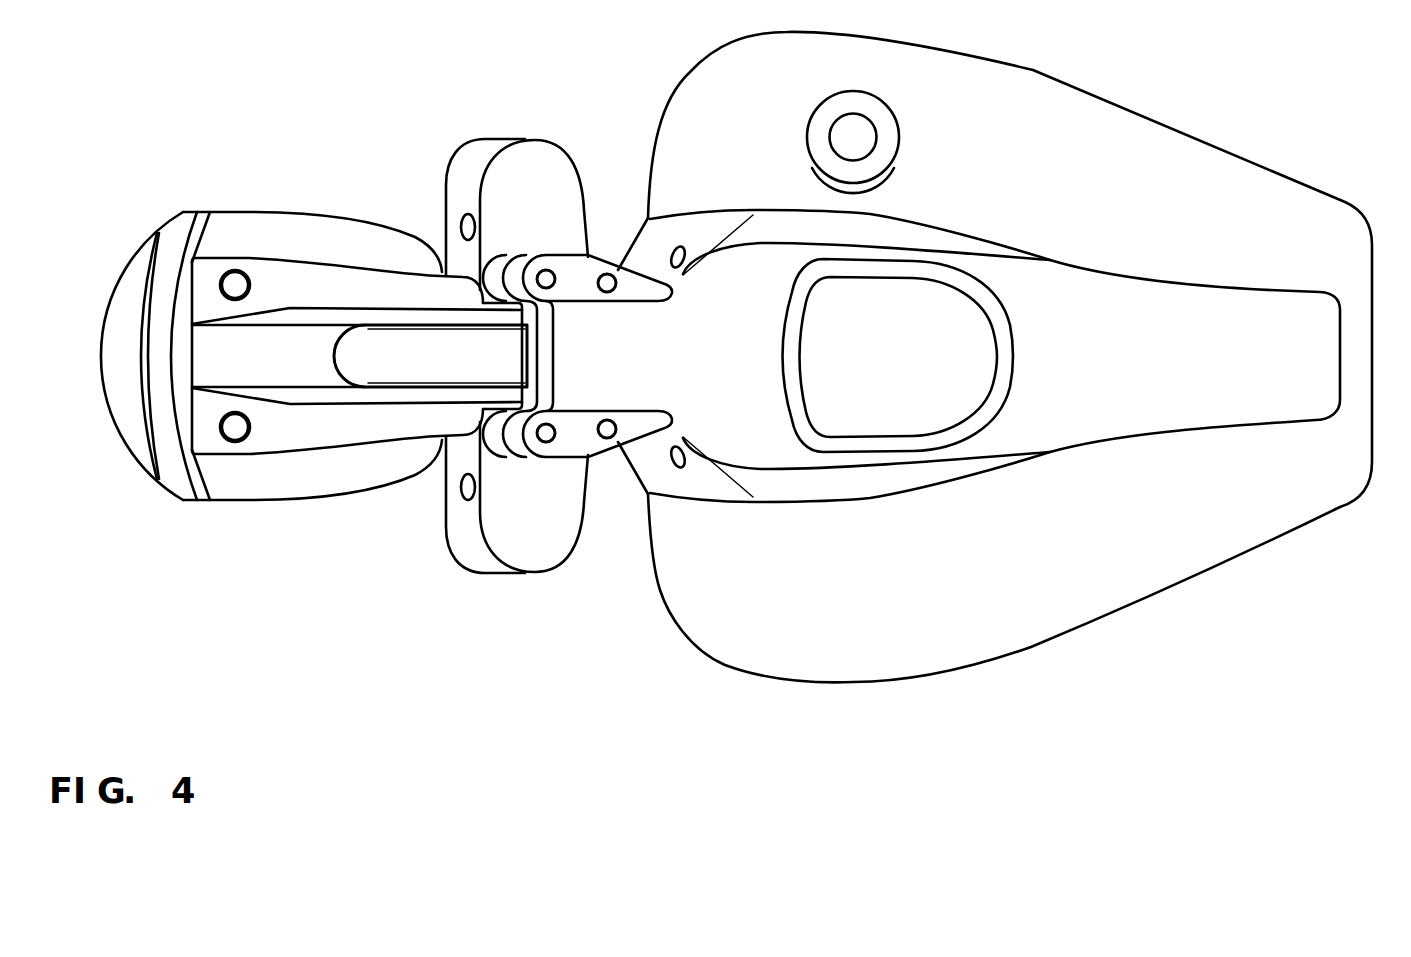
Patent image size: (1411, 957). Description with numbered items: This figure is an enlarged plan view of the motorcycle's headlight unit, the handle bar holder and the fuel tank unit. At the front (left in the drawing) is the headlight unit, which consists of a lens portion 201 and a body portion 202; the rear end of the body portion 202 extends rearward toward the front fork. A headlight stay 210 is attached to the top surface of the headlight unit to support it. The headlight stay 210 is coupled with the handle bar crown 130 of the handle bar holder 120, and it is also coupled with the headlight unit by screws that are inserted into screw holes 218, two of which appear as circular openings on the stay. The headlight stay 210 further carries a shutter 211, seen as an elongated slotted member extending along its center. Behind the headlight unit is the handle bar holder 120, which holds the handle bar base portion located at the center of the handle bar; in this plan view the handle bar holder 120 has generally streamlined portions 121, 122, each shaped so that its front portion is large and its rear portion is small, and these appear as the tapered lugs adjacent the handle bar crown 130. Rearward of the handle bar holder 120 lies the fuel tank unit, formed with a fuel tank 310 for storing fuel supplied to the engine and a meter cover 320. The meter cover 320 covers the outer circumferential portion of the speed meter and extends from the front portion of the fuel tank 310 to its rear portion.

The handle bar holder 120 is at (567, 443).
The streamlined portion 121 is at (590, 357).
The streamlined portion 122 is at (587, 278).
The handle bar crown 130 is at (527, 162).
The lens portion 201 is at (130, 287).
The body portion 202 is at (322, 235).
The headlight stay 210 is at (285, 432).
The shutter 211 is at (380, 363).
The screw holes 218 is at (235, 268).
The fuel tank 310 is at (1113, 135).
The meter cover 320 is at (1260, 303).